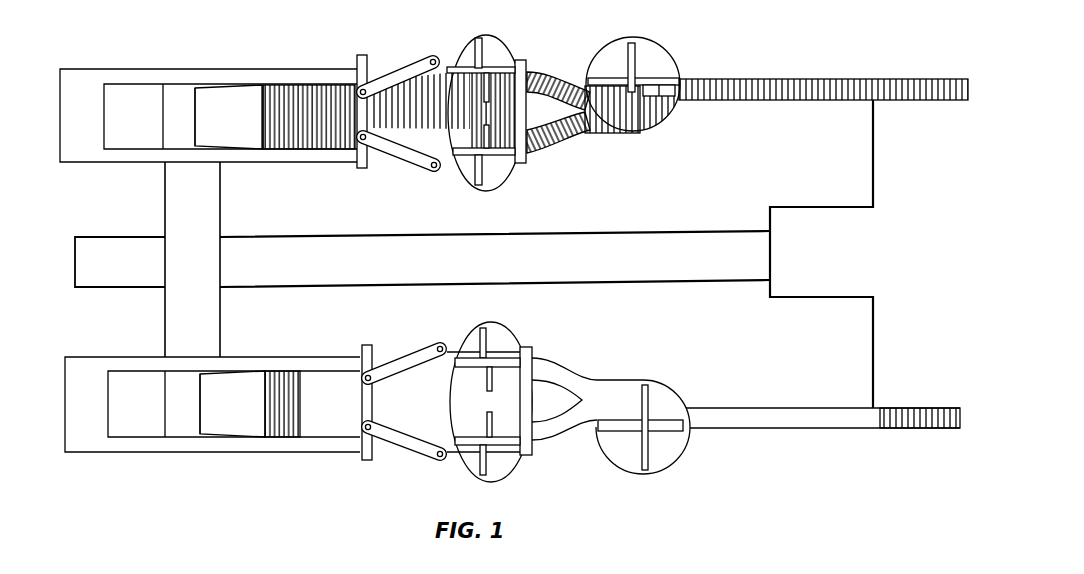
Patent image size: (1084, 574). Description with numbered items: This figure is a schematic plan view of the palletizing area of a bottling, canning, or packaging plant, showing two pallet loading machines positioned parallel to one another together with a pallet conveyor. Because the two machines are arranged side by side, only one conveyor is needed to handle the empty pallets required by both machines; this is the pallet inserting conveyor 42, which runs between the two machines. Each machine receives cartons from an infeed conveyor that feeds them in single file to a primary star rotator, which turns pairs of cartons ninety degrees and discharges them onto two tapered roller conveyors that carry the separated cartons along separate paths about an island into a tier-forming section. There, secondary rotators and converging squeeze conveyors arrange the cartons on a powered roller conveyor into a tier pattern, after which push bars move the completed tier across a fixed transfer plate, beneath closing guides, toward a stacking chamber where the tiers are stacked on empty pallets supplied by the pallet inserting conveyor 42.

The pallet inserting conveyor 42 is at (178, 193).